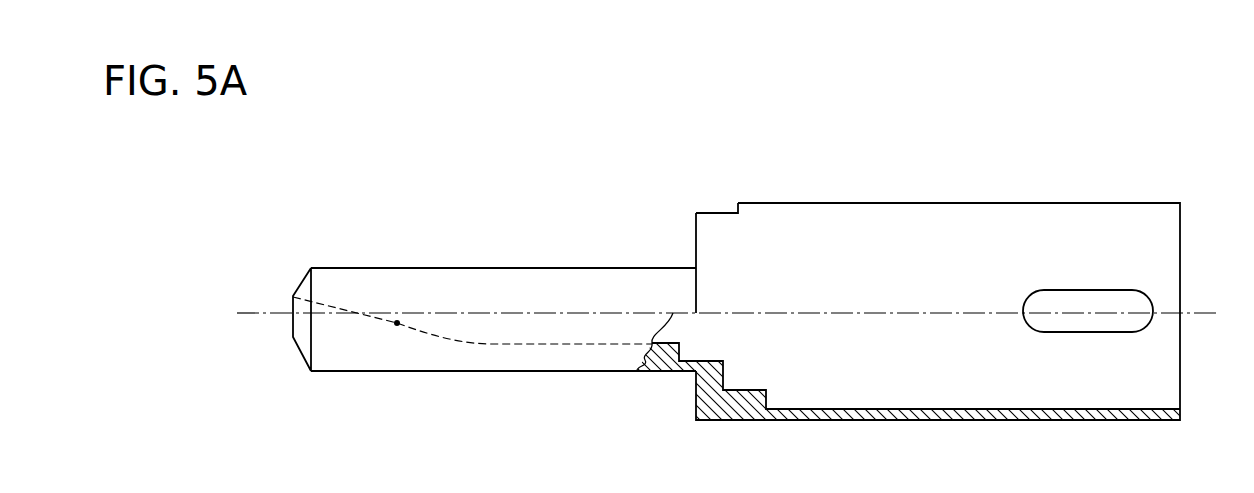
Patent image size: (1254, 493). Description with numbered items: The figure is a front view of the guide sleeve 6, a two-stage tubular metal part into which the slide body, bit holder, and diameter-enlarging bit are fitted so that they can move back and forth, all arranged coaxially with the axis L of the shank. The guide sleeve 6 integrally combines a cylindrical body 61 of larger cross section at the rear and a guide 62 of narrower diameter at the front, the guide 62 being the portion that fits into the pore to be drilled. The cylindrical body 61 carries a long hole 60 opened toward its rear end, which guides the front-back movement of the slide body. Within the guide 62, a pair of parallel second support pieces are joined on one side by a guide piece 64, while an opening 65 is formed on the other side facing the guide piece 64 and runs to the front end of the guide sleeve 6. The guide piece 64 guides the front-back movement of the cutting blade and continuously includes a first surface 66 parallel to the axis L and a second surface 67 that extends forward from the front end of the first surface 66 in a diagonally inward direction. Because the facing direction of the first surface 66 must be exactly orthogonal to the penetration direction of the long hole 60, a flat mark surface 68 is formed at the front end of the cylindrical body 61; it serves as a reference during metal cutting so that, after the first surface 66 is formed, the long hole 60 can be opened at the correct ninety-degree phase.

The guide sleeve 6 is at (782, 254).
The long hole 60 is at (1088, 290).
The cylindrical body 61 is at (608, 118).
The guide 62 is at (603, 278).
The guide piece 64 is at (472, 391).
The opening 65 is at (475, 268).
The first surface 66 is at (383, 442).
The second surface 67 is at (397, 324).
The mark surface 68 is at (715, 213).
The axis L is at (912, 313).